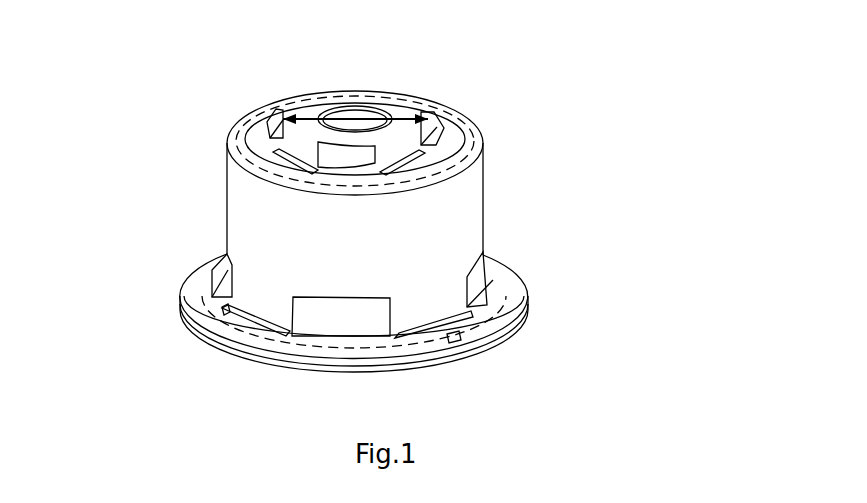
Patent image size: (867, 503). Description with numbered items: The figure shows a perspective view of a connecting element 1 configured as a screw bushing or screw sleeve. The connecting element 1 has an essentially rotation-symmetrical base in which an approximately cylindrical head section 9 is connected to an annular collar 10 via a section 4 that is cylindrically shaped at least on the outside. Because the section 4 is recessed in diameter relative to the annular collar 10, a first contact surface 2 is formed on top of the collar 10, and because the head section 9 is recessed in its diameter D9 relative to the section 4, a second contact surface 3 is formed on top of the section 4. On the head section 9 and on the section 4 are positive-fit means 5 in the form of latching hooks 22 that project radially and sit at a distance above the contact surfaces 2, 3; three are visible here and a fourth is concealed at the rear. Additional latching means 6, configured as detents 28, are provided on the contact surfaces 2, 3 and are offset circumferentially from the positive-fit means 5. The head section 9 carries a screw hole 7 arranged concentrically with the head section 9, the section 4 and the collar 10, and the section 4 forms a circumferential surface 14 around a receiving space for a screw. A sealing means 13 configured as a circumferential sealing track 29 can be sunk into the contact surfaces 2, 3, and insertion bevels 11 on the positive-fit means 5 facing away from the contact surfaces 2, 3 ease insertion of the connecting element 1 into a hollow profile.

The connecting element 1 is at (148, 381).
The first contact surface 2 is at (510, 290).
The second contact surface 3 is at (467, 123).
The section 4 is at (274, 199).
The circumferential surface 14 is at (230, 203).
The positive-fit means 5 is at (343, 165).
The latching hooks 22 is at (278, 120).
The latching means 6 is at (339, 247).
The detents 28 is at (268, 138).
The screw hole 7 is at (362, 117).
The head section 9 is at (405, 94).
The diameter of the head section D9 is at (355, 117).
The annular collar 10 is at (290, 378).
The insertion bevels 11 is at (438, 110).
The sealing means 13 is at (405, 304).
The sealing track 29 is at (467, 141).